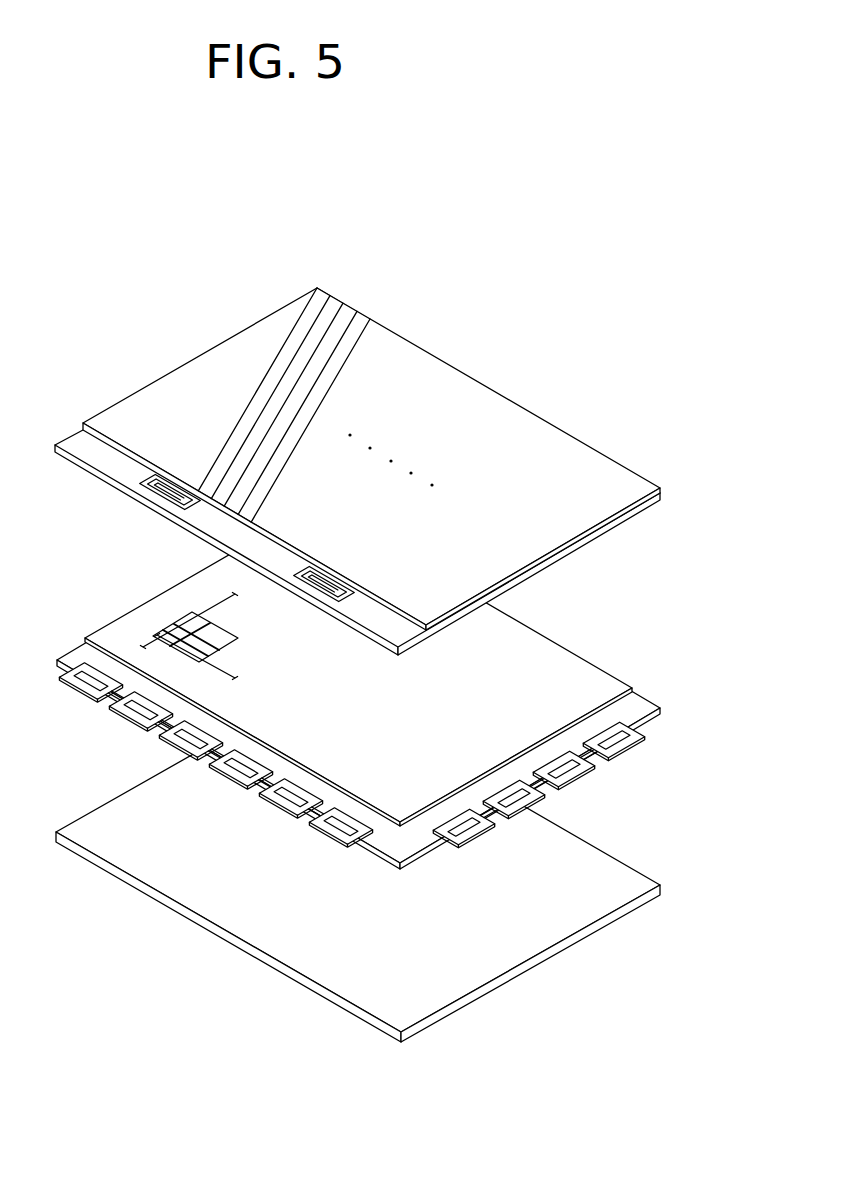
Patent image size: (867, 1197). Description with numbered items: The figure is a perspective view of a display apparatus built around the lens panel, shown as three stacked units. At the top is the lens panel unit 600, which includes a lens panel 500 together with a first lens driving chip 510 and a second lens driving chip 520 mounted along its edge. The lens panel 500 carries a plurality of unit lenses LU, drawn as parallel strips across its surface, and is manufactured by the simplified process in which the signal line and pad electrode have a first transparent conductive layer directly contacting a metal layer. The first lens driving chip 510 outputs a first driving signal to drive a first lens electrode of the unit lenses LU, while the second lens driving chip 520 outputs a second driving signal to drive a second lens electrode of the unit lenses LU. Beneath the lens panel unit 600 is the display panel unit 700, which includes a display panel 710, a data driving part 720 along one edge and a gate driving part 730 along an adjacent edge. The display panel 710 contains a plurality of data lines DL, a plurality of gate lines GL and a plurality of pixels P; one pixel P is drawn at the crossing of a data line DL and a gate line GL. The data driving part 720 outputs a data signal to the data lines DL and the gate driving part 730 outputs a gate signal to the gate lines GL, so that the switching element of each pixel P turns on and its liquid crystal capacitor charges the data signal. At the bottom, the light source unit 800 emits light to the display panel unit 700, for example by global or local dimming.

The lens panel 500 is at (535, 412).
The first lens driving chip 510 is at (157, 493).
The second lens driving chip 520 is at (330, 590).
The lens panel unit 600 is at (463, 336).
The unit lenses LU is at (378, 321).
The display panel unit 700 is at (581, 617).
The display panel 710 is at (613, 673).
The data driving part 720 is at (377, 826).
The gate driving part 730 is at (610, 752).
The pixel P is at (190, 630).
The data lines DL is at (150, 637).
The gate lines GL is at (236, 664).
The light source unit 800 is at (649, 861).